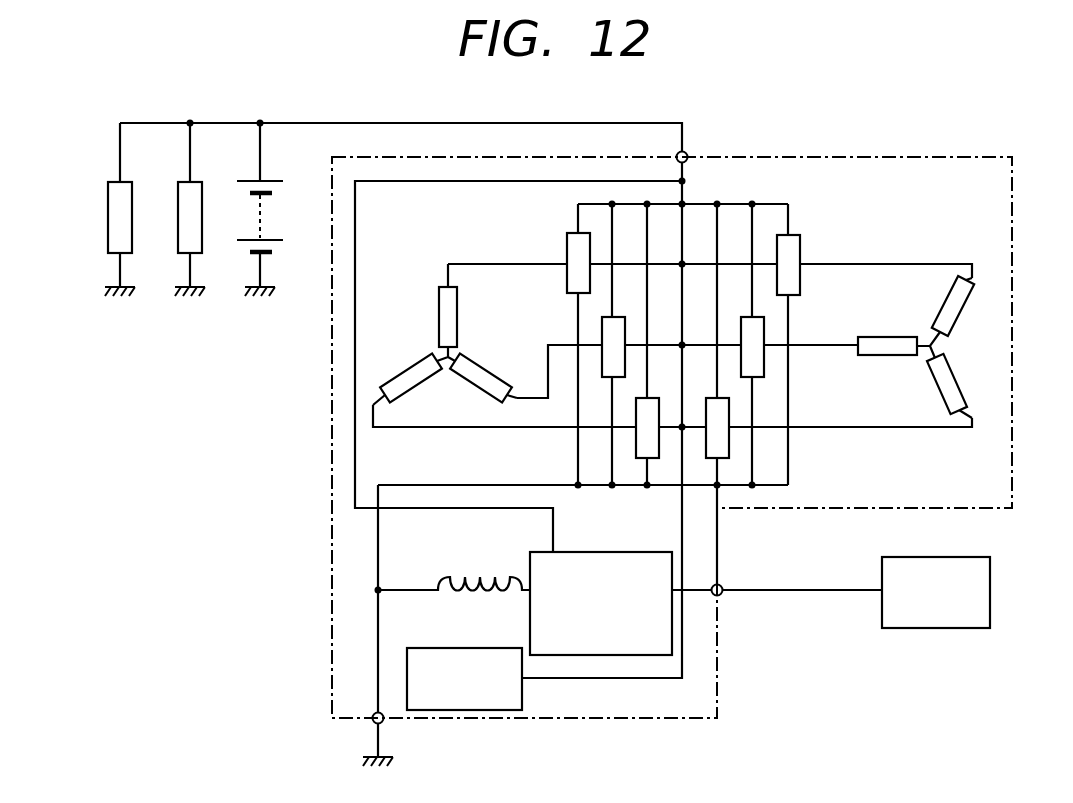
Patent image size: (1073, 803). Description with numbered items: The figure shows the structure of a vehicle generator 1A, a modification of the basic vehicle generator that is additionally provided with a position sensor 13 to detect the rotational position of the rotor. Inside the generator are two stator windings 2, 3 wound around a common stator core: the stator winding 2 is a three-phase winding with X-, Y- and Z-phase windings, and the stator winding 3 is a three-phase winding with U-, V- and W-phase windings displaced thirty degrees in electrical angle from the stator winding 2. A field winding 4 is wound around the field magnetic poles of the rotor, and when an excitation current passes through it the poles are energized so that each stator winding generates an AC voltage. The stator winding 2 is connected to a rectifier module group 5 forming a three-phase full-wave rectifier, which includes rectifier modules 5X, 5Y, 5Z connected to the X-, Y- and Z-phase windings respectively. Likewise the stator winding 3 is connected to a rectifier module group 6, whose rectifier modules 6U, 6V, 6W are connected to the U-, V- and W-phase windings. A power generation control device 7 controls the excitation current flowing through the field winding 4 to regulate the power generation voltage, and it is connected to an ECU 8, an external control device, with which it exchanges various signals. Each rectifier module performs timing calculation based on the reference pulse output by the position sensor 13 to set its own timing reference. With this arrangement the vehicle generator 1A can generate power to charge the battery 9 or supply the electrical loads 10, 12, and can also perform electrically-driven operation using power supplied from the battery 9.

The vehicle generator 1A is at (977, 157).
The stator winding 2 is at (432, 345).
The stator winding 3 is at (925, 332).
The field winding 4 is at (476, 577).
The rectifier module group 5 is at (574, 338).
The rectifier module 5X is at (567, 234).
The rectifier module 5Y is at (636, 437).
The rectifier module 5Z is at (602, 330).
The rectifier module group 6 is at (802, 332).
The rectifier module 6U is at (800, 236).
The rectifier module 6V is at (767, 328).
The rectifier module 6W is at (732, 440).
The power generation control device 7 is at (600, 552).
The ECU 8 is at (977, 557).
The battery 9 is at (284, 241).
The electrical load 10 is at (178, 246).
The electrical load 12 is at (110, 183).
The position sensor 13 is at (447, 648).